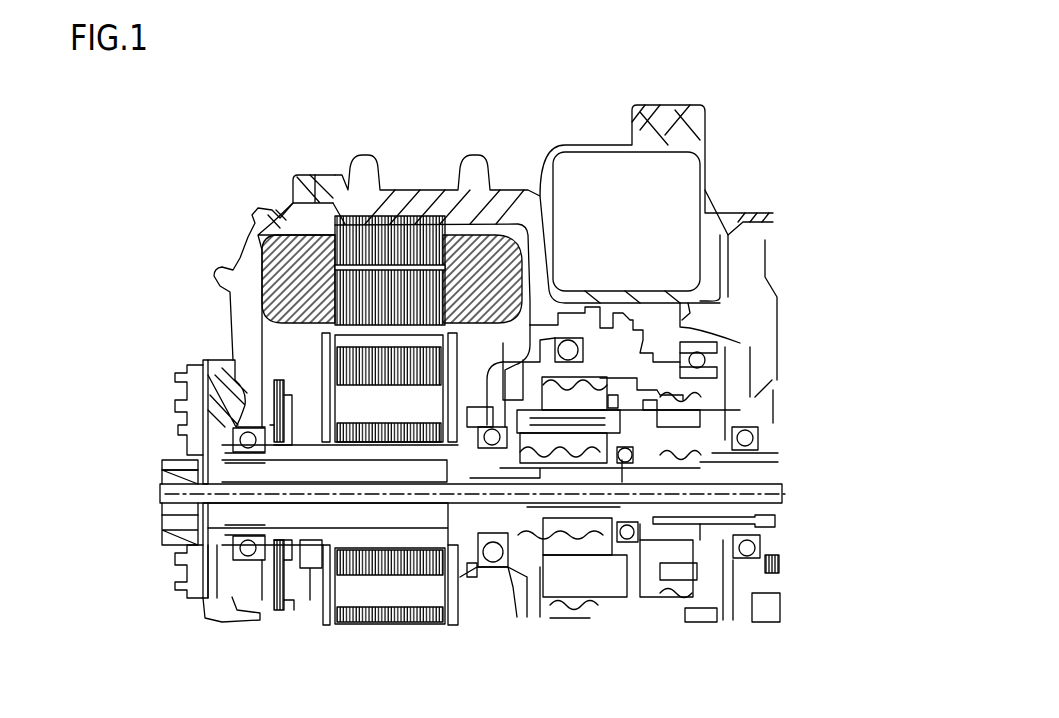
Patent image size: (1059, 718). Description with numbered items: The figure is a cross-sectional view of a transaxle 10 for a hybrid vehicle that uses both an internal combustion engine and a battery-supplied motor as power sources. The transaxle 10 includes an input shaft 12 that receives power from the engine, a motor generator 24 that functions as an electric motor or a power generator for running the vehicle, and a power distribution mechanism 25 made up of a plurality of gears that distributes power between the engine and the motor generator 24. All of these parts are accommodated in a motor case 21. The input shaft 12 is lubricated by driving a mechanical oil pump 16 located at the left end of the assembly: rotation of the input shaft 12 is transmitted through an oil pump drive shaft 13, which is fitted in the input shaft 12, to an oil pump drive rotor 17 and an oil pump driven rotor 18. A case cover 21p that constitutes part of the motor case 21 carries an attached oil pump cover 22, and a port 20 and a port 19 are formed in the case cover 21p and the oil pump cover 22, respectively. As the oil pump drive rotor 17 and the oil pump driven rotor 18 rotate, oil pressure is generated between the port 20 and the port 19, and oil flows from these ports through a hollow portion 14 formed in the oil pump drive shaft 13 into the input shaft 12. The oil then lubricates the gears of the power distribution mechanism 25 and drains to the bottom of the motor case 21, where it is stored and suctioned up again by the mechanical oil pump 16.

The transaxle 10 is at (236, 126).
The motor case 21 is at (521, 177).
The case cover 21p is at (222, 394).
The oil pump cover 22 is at (200, 412).
The port 20 is at (212, 439).
The port 19 is at (188, 464).
The mechanical oil pump 16 is at (147, 493).
The oil pump drive rotor 17 is at (212, 510).
The oil pump driven rotor 18 is at (212, 537).
The input shaft 12 is at (767, 508).
The hollow portion 14 is at (273, 503).
The oil pump drive shaft 13 is at (310, 505).
The motor generator 24 is at (462, 630).
The power distribution mechanism 25 is at (737, 630).